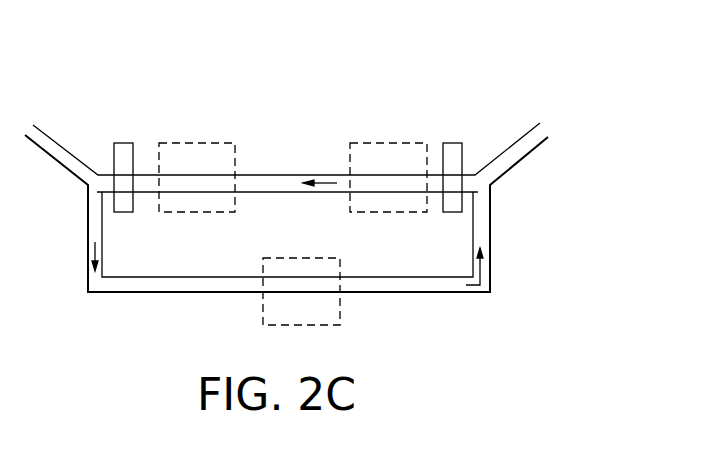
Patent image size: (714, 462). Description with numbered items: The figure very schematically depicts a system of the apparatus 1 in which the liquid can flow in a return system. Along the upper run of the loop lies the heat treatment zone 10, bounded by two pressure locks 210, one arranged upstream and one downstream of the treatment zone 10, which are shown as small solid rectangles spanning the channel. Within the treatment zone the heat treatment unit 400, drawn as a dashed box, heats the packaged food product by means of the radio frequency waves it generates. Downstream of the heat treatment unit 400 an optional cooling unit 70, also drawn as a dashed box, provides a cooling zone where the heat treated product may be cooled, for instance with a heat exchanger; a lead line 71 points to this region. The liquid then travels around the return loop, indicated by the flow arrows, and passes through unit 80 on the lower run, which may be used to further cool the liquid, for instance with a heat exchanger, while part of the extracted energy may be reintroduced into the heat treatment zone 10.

The apparatus 1 is at (501, 75).
The heat treatment zone 10 is at (207, 183).
The cooling unit 70 is at (417, 123).
The pump outlet 71 is at (397, 185).
The unit 80 is at (361, 331).
The pressure locks 210 is at (128, 135).
The heat treatment unit 400 is at (207, 124).